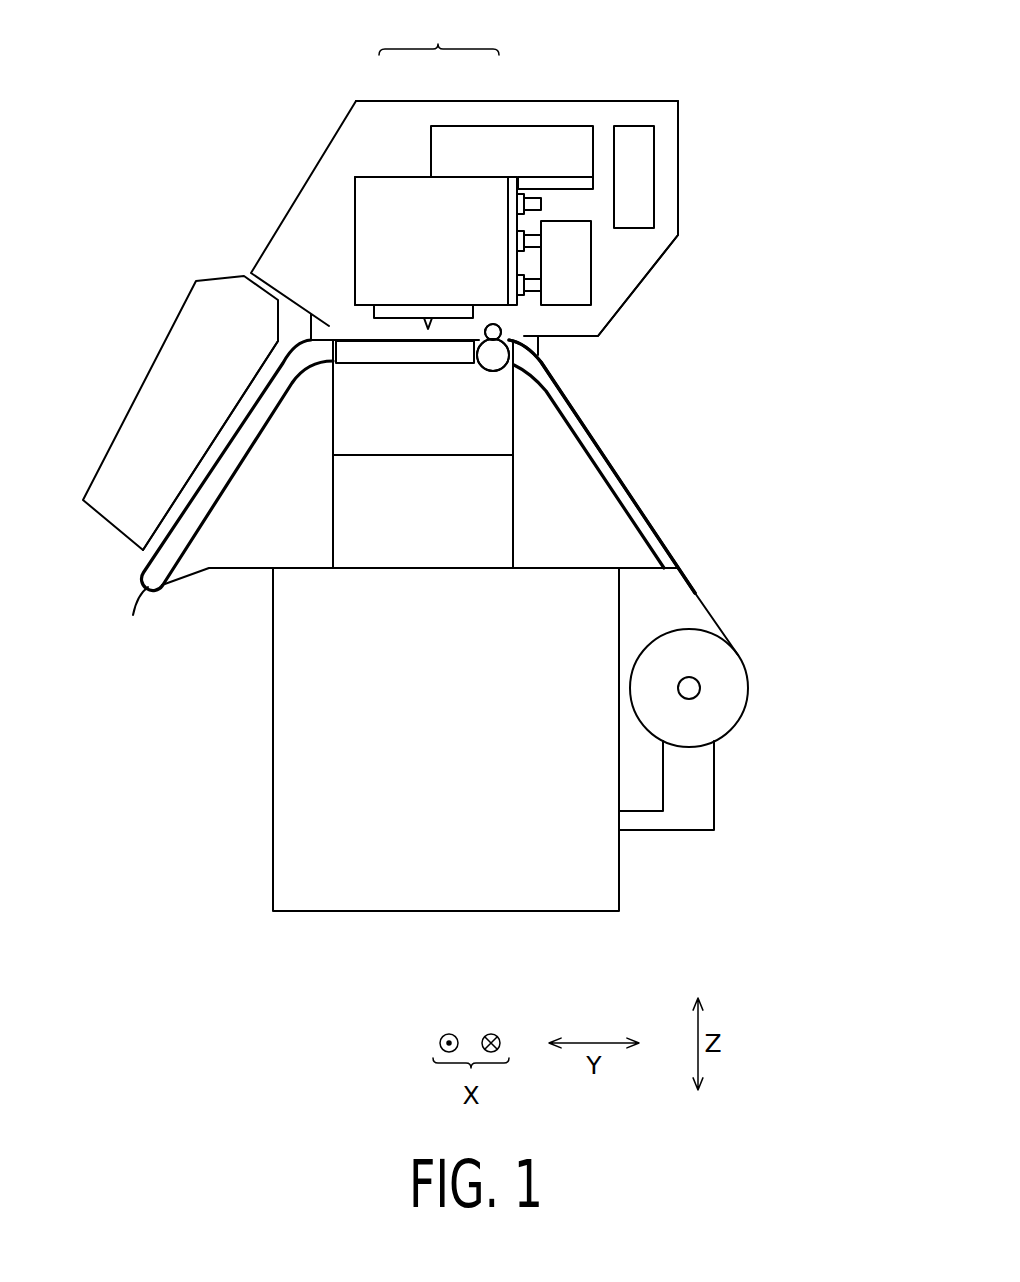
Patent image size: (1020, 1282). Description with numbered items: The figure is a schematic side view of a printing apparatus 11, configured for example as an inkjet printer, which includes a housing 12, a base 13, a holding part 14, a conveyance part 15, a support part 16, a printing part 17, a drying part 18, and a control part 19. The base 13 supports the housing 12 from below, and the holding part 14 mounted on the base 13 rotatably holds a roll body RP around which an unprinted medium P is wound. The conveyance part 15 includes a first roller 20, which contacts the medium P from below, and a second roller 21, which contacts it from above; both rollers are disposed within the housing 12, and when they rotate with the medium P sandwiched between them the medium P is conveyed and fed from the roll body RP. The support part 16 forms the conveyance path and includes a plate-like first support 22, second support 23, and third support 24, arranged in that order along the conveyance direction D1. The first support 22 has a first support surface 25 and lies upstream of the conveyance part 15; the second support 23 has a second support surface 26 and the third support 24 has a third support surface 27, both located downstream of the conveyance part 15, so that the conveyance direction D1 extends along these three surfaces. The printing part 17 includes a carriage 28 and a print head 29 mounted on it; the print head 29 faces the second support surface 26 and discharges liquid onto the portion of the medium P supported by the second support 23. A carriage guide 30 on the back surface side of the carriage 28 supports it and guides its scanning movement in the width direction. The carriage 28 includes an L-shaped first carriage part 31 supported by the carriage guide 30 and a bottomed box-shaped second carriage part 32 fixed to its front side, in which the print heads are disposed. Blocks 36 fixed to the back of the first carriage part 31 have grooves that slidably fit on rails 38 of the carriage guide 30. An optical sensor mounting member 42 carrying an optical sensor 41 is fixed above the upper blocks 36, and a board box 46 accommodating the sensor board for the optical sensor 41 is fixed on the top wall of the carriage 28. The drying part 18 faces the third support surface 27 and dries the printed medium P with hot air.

The printing apparatus 11 is at (829, 139).
The housing 12 is at (326, 146).
The base 13 is at (620, 870).
The holding part 14 is at (714, 780).
The conveyance part 15 is at (517, 325).
The support part 16 is at (634, 393).
The printing part 17 is at (337, 209).
The drying part 18 is at (148, 378).
The control part 19 is at (655, 142).
The first roller 20 is at (490, 366).
The second roller 21 is at (492, 320).
The first support 22 is at (637, 529).
The second support 23 is at (402, 362).
The third support 24 is at (243, 457).
The first support surface 25 is at (618, 465).
The second support surface 26 is at (366, 335).
The third support surface 27 is at (262, 383).
The carriage 28 is at (439, 33).
The print head 29 is at (433, 302).
The carriage guide 30 is at (590, 261).
The first carriage part 31 is at (504, 205).
The second carriage part 32 is at (415, 173).
The block 36 is at (514, 238).
The rail 38 is at (540, 238).
The optical sensor 41 is at (531, 203).
The optical sensor mounting member 42 is at (522, 192).
The board box 46 is at (577, 122).
The medium P is at (697, 587).
The roll body RP is at (748, 683).
The conveyance direction D1 is at (235, 490).